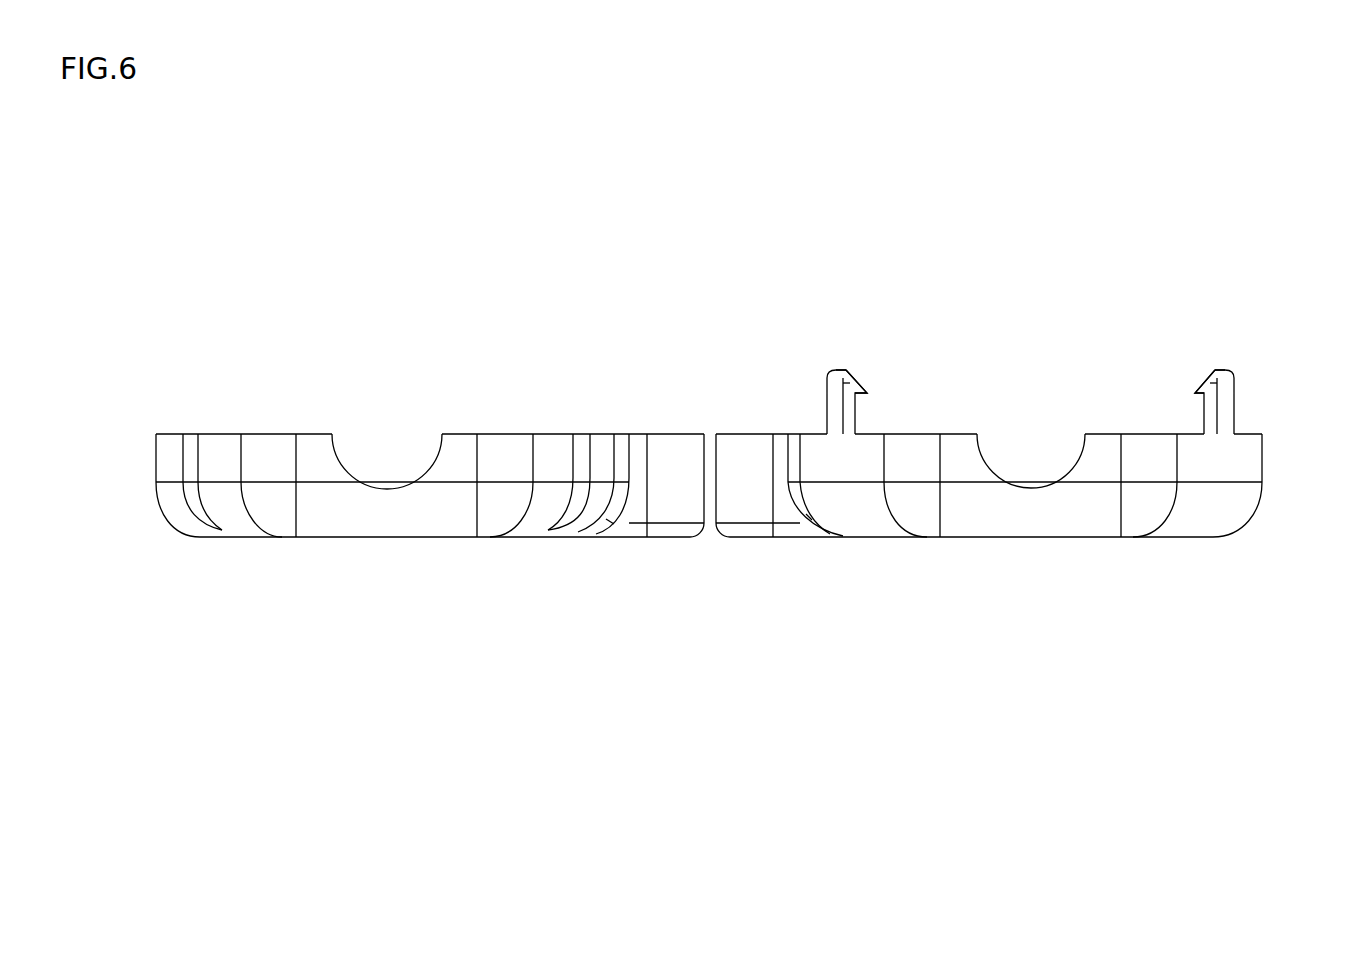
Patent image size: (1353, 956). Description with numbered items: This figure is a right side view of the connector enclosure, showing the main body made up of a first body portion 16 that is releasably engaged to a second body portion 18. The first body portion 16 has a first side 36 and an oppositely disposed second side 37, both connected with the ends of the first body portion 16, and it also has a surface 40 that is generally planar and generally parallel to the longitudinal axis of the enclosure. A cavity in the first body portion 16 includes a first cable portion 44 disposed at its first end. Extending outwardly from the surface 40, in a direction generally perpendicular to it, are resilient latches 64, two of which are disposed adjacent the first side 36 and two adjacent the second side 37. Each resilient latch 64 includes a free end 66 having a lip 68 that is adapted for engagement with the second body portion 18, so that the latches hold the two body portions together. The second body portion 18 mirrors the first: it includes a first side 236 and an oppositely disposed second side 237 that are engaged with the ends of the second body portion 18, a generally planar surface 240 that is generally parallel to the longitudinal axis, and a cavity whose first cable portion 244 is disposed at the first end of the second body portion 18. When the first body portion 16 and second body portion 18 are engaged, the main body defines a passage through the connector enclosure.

The first body portion 16 is at (1028, 537).
The second body portion 18 is at (386, 537).
The first side 36 is at (1263, 470).
The first side 236 is at (156, 472).
The second side 37 is at (788, 487).
The second side 237 is at (629, 502).
The surface 40 is at (923, 434).
The surface 240 is at (502, 434).
The first cable portion 44 is at (983, 450).
The first cable portion 244 is at (347, 470).
The resilient latch 64 is at (817, 417).
The free end 66 is at (845, 385).
The lip 68 is at (853, 390).